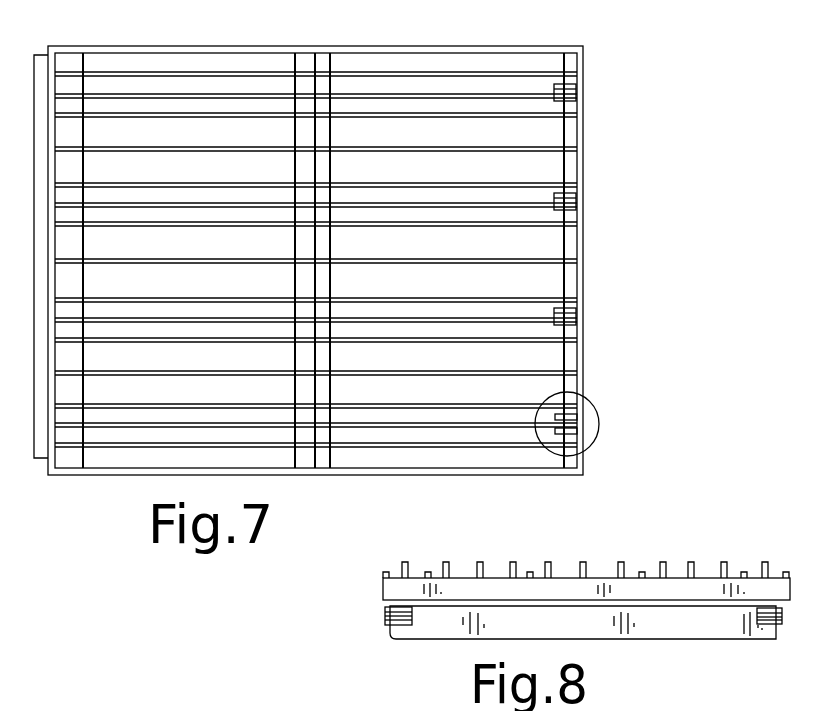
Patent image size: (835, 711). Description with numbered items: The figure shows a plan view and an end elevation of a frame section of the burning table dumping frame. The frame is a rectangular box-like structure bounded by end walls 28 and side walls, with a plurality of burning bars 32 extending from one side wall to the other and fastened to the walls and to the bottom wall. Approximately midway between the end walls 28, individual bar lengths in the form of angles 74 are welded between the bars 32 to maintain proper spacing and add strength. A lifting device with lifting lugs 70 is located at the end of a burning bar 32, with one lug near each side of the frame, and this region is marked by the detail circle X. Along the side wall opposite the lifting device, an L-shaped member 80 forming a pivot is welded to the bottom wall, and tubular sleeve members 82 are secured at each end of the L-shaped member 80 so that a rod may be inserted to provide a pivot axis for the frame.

In FIG. 7, the end wall 28 is at (583, 131).
In FIG. 7, the burning bar 32 is at (405, 86).
In FIG. 8, the burning bar 32 is at (768, 566).
In FIG. 7, the angle 74 is at (320, 62).
In FIG. 7, the lifting lug 70 is at (574, 412).
In FIG. 7, the detail circle X is at (598, 426).
In FIG. 8, the L-shaped member 80 is at (742, 639).
In FIG. 8, the tubular sleeve member 82 is at (388, 626).